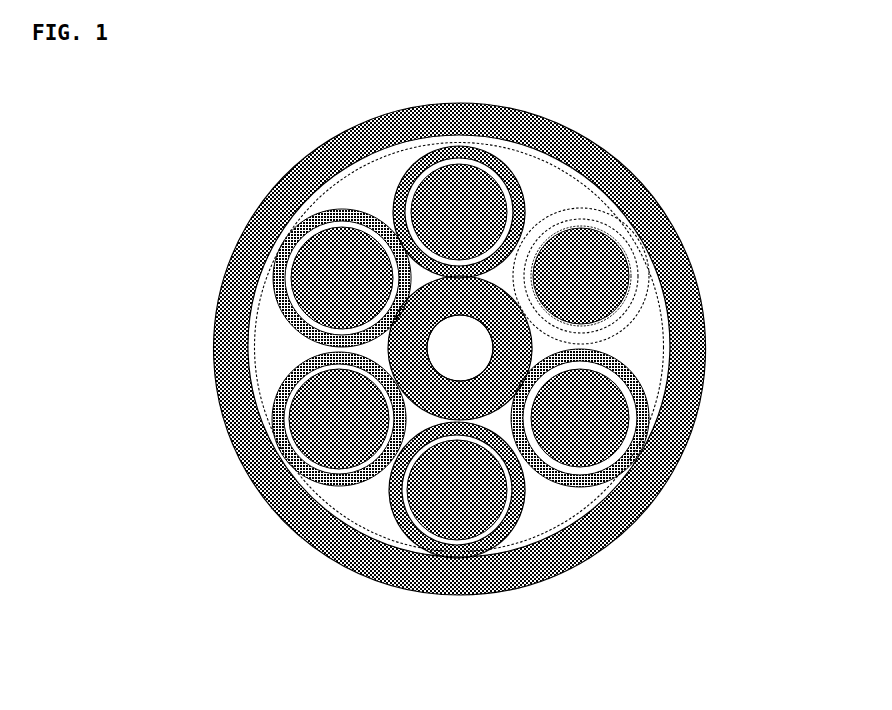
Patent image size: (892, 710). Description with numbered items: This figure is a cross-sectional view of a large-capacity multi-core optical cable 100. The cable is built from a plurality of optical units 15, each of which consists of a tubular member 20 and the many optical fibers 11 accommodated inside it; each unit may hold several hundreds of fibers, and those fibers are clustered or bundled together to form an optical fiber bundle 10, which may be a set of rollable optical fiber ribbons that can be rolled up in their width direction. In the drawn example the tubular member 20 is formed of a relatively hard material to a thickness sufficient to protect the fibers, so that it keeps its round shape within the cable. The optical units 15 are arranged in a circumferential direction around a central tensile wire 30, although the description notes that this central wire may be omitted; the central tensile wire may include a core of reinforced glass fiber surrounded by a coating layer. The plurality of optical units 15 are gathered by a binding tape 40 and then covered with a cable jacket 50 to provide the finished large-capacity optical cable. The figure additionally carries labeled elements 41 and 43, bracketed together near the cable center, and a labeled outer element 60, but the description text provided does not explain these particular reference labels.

The large-capacity multi-core optical cable 100 is at (222, 128).
The optical fiber bundle 10 is at (651, 212).
The optical fiber 11 is at (626, 258).
The optical unit 15 is at (562, 209).
The tubular member 20 is at (652, 420).
The central tensile wire 30 is at (285, 318).
The binding tape 40 is at (613, 348).
The core tension member 41 is at (468, 358).
The central sheath 43 is at (470, 400).
The cable jacket 50 is at (603, 501).
The outer sheath 60 is at (557, 553).